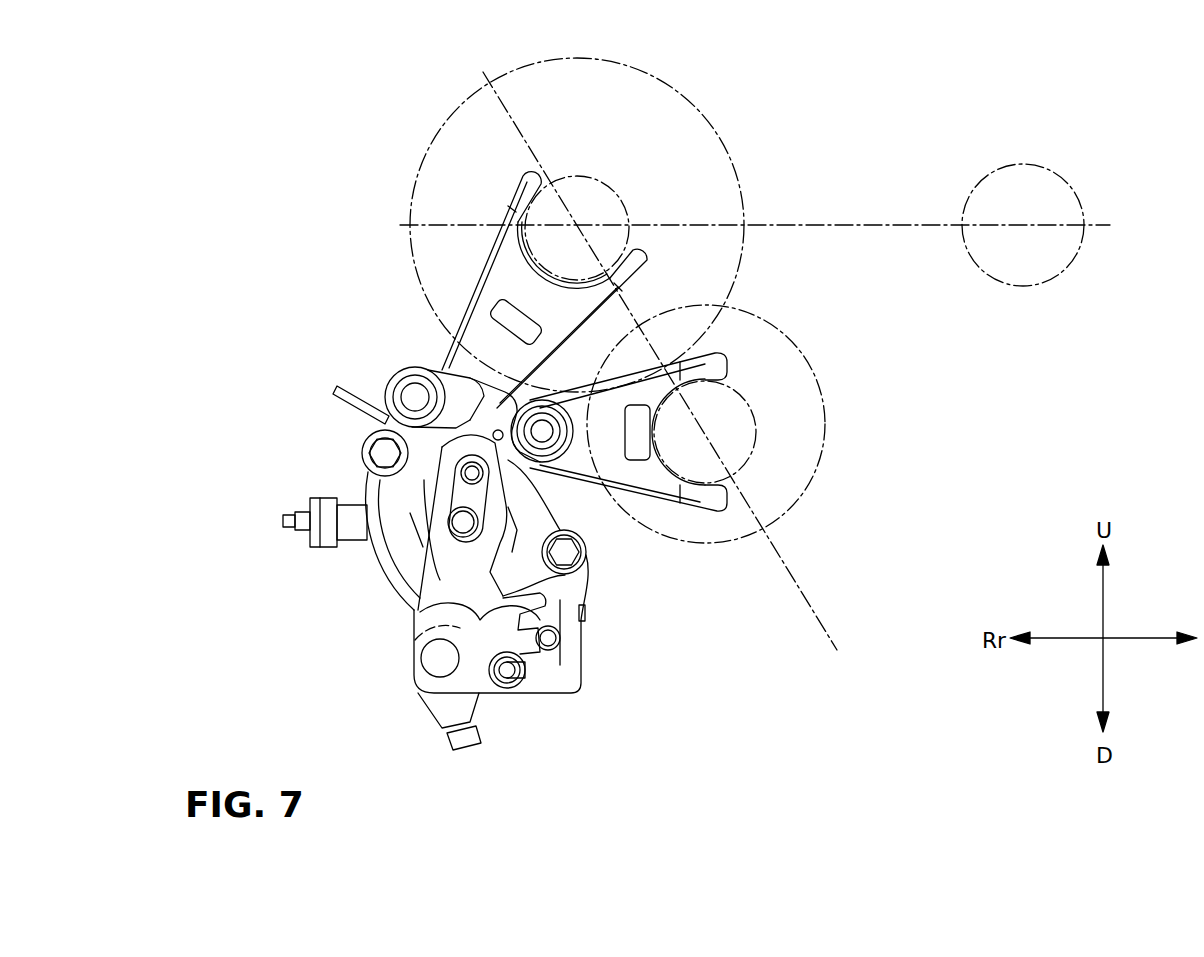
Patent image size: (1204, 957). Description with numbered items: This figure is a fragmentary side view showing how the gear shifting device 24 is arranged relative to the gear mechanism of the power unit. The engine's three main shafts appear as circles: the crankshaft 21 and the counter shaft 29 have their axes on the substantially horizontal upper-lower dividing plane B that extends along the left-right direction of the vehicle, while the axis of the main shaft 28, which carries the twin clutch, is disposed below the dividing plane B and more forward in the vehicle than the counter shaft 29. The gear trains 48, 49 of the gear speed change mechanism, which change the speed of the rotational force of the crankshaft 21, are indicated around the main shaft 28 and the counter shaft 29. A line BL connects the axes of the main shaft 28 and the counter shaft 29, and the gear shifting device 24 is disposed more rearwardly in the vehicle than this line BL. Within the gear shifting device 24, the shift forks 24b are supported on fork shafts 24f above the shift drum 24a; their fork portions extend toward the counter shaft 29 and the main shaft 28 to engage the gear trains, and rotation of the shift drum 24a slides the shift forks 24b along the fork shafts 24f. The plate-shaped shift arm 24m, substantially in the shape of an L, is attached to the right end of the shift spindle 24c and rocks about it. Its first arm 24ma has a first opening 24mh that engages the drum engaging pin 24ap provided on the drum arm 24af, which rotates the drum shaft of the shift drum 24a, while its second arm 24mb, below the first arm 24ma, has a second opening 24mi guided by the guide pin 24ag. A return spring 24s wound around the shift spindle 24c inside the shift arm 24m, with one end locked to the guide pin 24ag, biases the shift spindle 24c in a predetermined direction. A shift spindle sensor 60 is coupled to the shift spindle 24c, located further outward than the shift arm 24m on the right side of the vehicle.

The crankshaft 21 is at (1000, 167).
The gear shifting device 24 is at (298, 364).
The shift drum 24a is at (573, 440).
The drum arm 24af is at (455, 525).
The guide pin 24ag is at (580, 632).
The drum engaging pin 24ap is at (397, 378).
The shift fork 24b is at (490, 206).
The shift spindle 24c is at (438, 660).
The fork shaft 24f is at (452, 352).
The shift arm 24m is at (402, 625).
The first arm 24ma is at (440, 510).
The second arm 24mb is at (578, 645).
The first opening 24mh is at (380, 460).
The second opening 24mi is at (576, 670).
The return spring 24s is at (585, 612).
The main shaft 28 is at (740, 400).
The counter shaft 29 is at (612, 182).
The gear train 48 is at (823, 457).
The gear train 49 is at (452, 120).
The shift spindle sensor 60 is at (420, 725).
The upper-lower dividing plane B is at (1096, 225).
The line connecting the axes of the main shaft and counter shaft BL is at (806, 597).